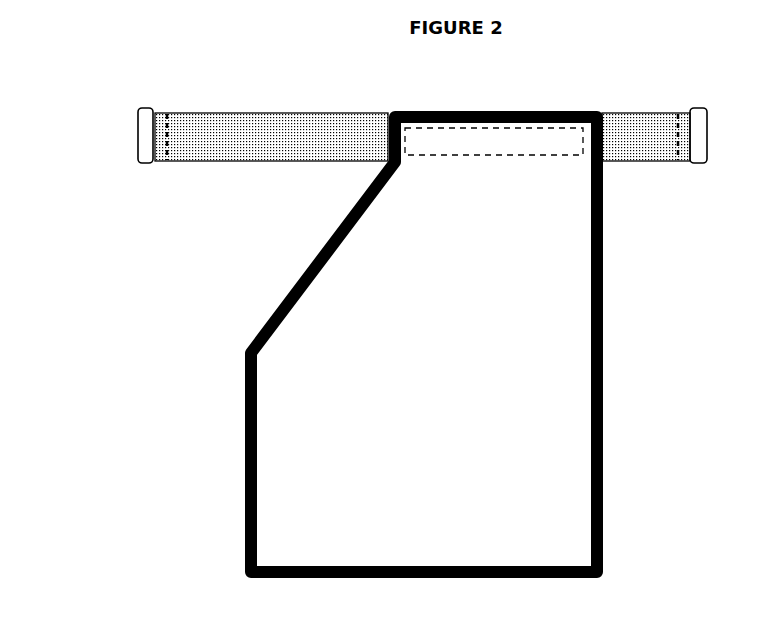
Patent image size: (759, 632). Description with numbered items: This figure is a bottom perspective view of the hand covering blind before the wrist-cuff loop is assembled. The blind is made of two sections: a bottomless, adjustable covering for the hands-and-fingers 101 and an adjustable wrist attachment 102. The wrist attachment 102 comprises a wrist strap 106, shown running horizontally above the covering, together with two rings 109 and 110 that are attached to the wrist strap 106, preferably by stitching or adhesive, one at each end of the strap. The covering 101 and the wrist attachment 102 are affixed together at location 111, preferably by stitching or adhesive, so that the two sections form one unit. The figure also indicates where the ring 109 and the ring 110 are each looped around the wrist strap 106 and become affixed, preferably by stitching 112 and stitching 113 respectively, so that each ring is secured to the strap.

The covering for the hands-and-fingers 101 is at (210, 168).
The wrist attachment 102 is at (385, 101).
The wrist strap 106 is at (277, 102).
The ring 109 is at (145, 97).
The ring 110 is at (698, 97).
The affixing of covering and wrist attachment 111 is at (562, 120).
The stitching 112 is at (167, 102).
The stitching 113 is at (678, 102).